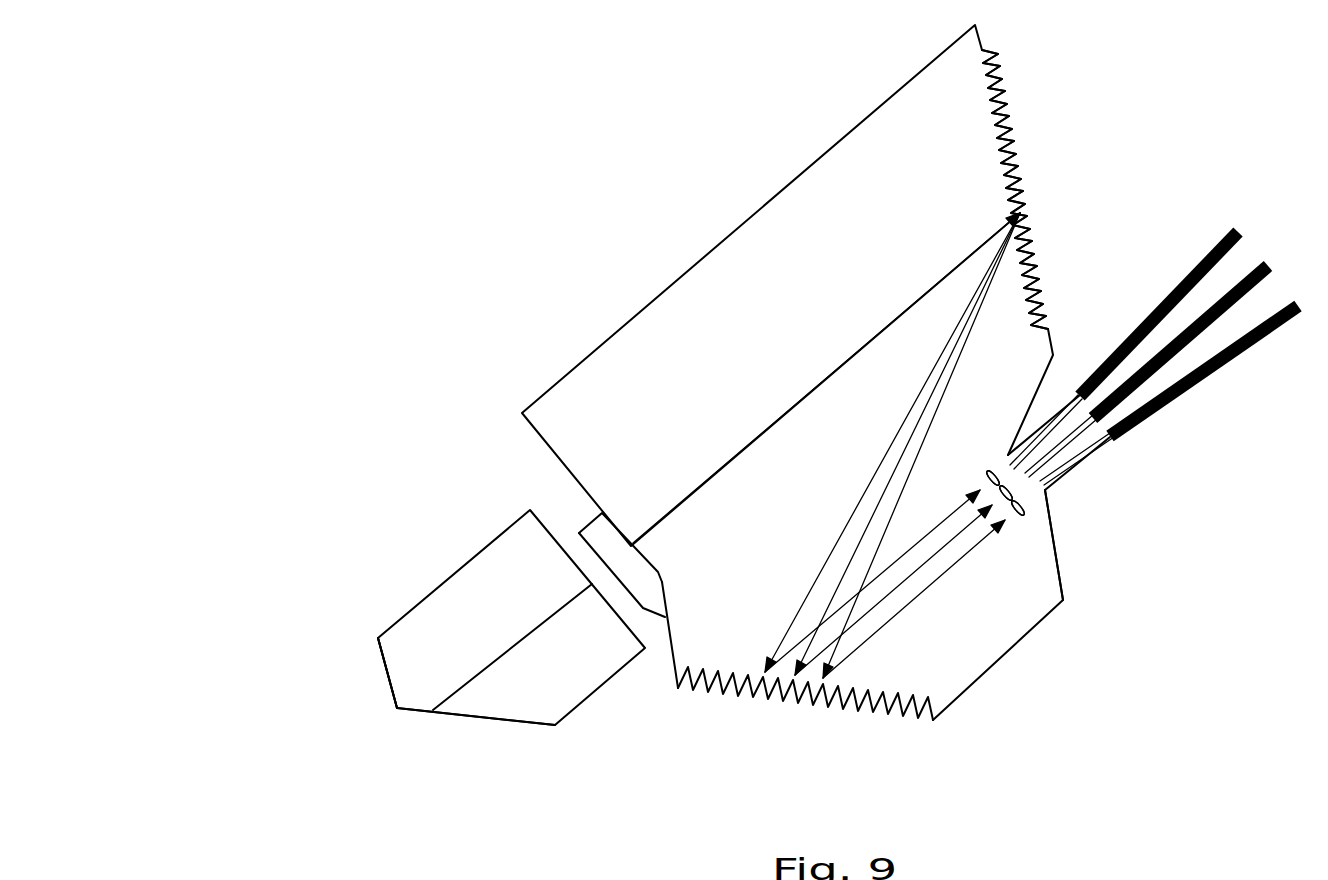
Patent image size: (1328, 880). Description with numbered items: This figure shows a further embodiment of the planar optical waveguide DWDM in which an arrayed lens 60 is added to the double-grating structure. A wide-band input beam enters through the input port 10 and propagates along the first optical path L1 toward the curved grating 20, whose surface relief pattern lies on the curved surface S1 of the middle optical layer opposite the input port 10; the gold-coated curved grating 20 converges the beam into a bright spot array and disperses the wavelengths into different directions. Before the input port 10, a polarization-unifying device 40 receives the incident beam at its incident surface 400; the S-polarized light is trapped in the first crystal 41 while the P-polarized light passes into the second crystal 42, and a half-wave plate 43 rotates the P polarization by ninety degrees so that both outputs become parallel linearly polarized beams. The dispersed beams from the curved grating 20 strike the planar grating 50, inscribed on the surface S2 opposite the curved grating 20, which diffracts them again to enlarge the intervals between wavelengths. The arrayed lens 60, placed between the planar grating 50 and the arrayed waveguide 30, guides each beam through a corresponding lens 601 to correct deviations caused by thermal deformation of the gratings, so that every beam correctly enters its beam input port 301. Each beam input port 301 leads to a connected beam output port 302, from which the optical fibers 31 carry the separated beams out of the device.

The input port 10 is at (522, 425).
The curved grating 20 is at (1022, 125).
The surface S1 is at (984, 47).
The first optical path L1 is at (795, 402).
The half-wave plate 43 is at (655, 598).
The surface S2 is at (688, 690).
The planar grating 50 is at (905, 740).
The polarization-unifying device 40 is at (382, 612).
The first crystal 41 is at (403, 650).
The incident surface 400 is at (378, 673).
The second crystal 42 is at (517, 698).
The arrayed lens 60 is at (1016, 524).
The lens 601 is at (993, 472).
The arrayed waveguide 30 is at (1083, 468).
The beam input port 301 is at (1047, 485).
The beam output port 302 is at (1107, 447).
The optical fiber 31 is at (1245, 355).